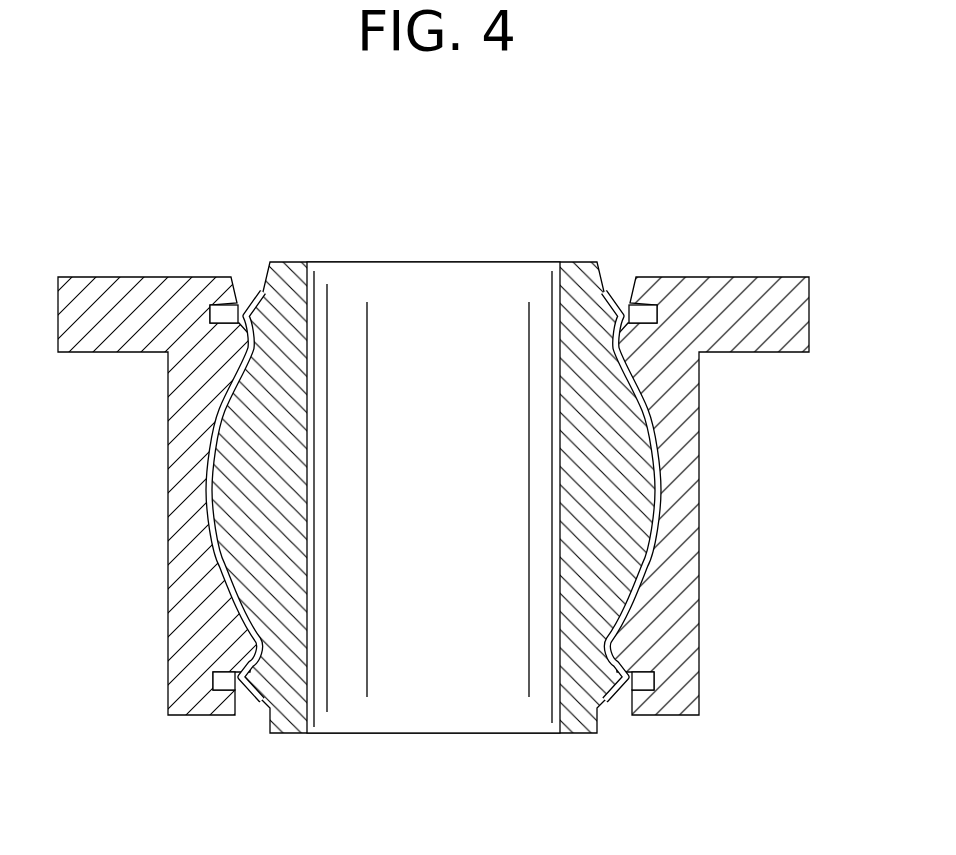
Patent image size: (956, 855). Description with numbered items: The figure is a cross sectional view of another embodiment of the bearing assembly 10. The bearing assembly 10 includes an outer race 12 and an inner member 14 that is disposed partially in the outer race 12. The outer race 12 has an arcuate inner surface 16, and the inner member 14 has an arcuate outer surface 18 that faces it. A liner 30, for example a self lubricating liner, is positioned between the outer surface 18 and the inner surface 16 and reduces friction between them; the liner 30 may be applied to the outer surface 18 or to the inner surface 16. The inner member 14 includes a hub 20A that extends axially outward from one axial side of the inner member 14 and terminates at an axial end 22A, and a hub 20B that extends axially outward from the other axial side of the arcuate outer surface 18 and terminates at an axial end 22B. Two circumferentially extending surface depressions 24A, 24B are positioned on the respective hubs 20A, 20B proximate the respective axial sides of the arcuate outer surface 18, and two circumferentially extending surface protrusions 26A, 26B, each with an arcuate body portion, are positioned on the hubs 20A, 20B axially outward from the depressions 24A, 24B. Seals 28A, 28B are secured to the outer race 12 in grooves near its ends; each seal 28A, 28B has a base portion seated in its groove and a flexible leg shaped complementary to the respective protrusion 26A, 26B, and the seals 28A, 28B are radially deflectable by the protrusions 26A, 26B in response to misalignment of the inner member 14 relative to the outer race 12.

The bearing assembly 10 is at (645, 233).
The outer race 12 is at (668, 538).
The inner member 14 is at (580, 578).
The arcuate inner surface 16 is at (438, 475).
The arcuate outer surface 18 is at (438, 475).
The hub 20A is at (438, 475).
The hub 20B is at (438, 475).
The axial end 22A is at (284, 260).
The axial end 22B is at (433, 502).
The circumferentially extending surface depression 24A is at (208, 488).
The circumferentially extending surface depression 24B is at (438, 475).
The circumferentially extending surface protrusion 26A is at (222, 306).
The circumferentially extending surface protrusion 26B is at (433, 485).
The seal 28A is at (240, 323).
The seal 28B is at (448, 495).
The liner 30 is at (438, 475).